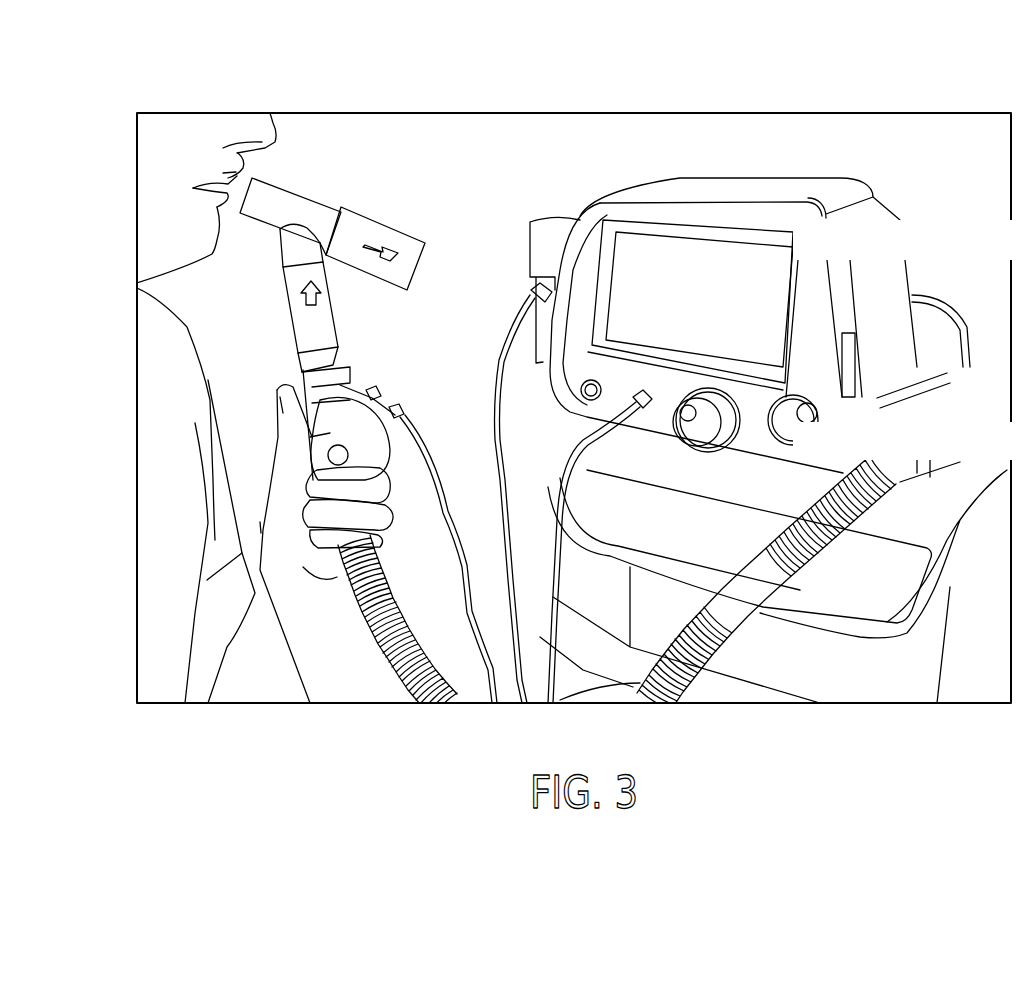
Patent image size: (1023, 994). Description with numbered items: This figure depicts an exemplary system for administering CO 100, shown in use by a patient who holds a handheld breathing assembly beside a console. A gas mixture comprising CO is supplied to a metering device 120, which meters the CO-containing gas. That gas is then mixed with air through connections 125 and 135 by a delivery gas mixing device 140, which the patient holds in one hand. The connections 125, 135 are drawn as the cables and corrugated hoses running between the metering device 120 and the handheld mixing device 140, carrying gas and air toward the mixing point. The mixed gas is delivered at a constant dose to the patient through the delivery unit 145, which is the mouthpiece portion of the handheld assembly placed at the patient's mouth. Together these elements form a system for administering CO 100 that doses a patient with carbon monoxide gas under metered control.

The system for administering CO 100 is at (168, 91).
The metering device 120 is at (722, 183).
The connection 125 is at (497, 457).
The connection 135 is at (525, 703).
The delivery gas mixing device 140 is at (332, 278).
The delivery unit 145 is at (293, 207).